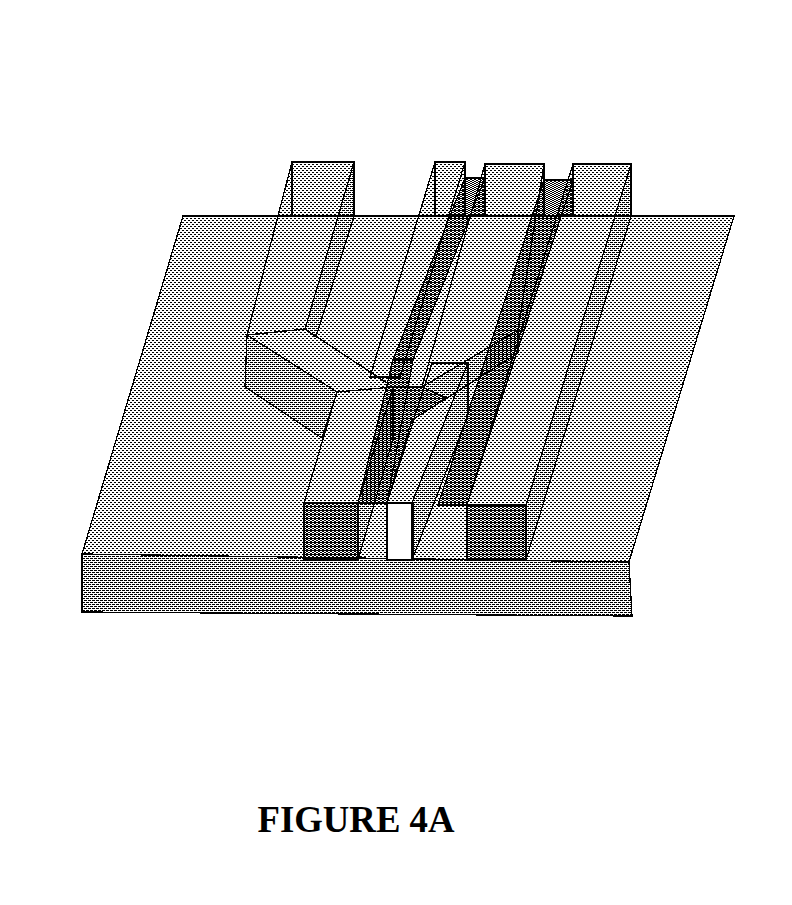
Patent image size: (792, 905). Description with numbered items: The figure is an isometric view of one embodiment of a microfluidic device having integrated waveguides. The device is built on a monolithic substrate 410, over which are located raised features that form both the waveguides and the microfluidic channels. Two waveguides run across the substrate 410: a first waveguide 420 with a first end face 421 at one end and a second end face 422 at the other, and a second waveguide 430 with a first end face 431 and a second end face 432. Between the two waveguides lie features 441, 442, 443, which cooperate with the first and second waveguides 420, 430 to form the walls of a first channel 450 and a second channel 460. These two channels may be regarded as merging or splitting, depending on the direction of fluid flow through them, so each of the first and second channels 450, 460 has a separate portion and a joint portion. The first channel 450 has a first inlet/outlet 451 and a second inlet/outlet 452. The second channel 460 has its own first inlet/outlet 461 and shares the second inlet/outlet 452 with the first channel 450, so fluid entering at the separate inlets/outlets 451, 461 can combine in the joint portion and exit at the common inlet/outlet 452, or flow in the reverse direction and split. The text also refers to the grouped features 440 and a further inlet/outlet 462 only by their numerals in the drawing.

The monolithic substrate 410 is at (605, 446).
The first waveguide 420 is at (549, 379).
The first end face 421 is at (642, 163).
The second end face 422 is at (455, 576).
The second waveguide 430 is at (312, 367).
The first end face 431 is at (352, 154).
The second end face 432 is at (285, 573).
The fin structure 440 is at (468, 362).
The feature 441 is at (437, 461).
The feature 442 is at (458, 296).
The feature 443 is at (465, 222).
The first channel 450 is at (468, 294).
The first inlet/outlet 451 is at (590, 163).
The second inlet/outlet 452 is at (340, 449).
The second channel 460 is at (441, 364).
The first inlet/outlet 461 is at (509, 161).
The end portion of liner 460 462 is at (338, 580).